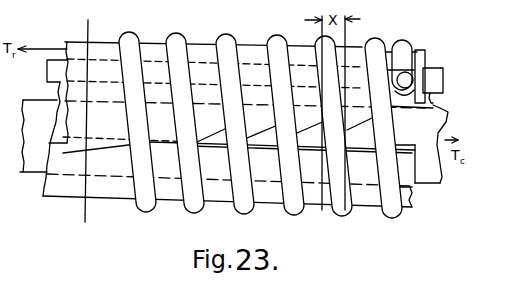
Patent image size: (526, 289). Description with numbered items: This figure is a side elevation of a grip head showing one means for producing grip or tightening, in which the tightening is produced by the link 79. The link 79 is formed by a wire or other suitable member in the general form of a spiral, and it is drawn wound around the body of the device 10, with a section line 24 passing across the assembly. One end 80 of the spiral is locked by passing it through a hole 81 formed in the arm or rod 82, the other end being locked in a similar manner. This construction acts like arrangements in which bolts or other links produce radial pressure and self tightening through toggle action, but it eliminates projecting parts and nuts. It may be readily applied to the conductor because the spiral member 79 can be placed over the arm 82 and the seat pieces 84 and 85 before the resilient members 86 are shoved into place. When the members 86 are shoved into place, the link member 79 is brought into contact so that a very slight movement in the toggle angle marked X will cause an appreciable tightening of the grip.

The shaft 10 is at (430, 178).
The section line 24 is at (88, 23).
The link 79 is at (280, 58).
The end 80 is at (404, 77).
The hole 81 is at (424, 76).
The arm or rod 82 is at (80, 47).
The seat piece 84 is at (43, 192).
The seat piece 85 is at (58, 97).
The resilient member 86 is at (440, 88).